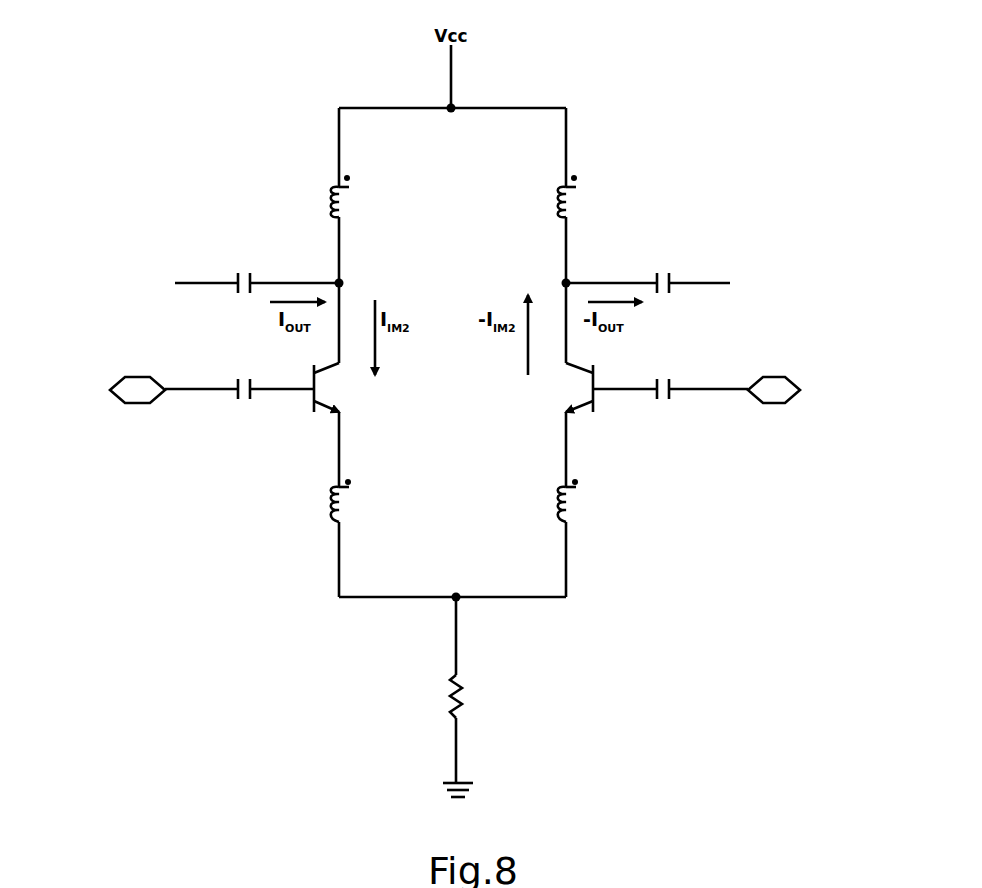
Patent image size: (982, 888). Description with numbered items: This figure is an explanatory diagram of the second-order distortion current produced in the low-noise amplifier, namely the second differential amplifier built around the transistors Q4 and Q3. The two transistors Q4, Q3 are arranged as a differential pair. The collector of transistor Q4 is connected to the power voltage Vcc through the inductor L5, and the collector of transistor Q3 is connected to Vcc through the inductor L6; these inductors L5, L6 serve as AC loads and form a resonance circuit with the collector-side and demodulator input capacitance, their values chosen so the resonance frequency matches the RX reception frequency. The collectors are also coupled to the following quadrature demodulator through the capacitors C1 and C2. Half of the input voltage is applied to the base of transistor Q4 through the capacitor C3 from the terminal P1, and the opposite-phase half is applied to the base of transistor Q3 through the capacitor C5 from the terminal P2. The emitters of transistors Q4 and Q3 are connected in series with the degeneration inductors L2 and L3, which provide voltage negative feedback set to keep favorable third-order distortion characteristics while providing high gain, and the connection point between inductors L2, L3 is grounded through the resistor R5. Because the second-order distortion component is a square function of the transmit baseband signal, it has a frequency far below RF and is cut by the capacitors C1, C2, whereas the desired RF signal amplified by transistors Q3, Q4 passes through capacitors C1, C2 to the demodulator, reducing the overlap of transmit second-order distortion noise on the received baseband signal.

The inductor L5 is at (322, 196).
The inductor L6 is at (584, 196).
The inductor L2 is at (326, 500).
The inductor L3 is at (583, 500).
The capacitor C1 is at (257, 297).
The capacitor C2 is at (648, 297).
The capacitor C3 is at (239, 403).
The capacitor C5 is at (670, 403).
The transistor Q4 is at (338, 387).
The transistor Q3 is at (572, 387).
The resistor R5 is at (475, 690).
The terminal P1 is at (104, 404).
The terminal P2 is at (807, 404).